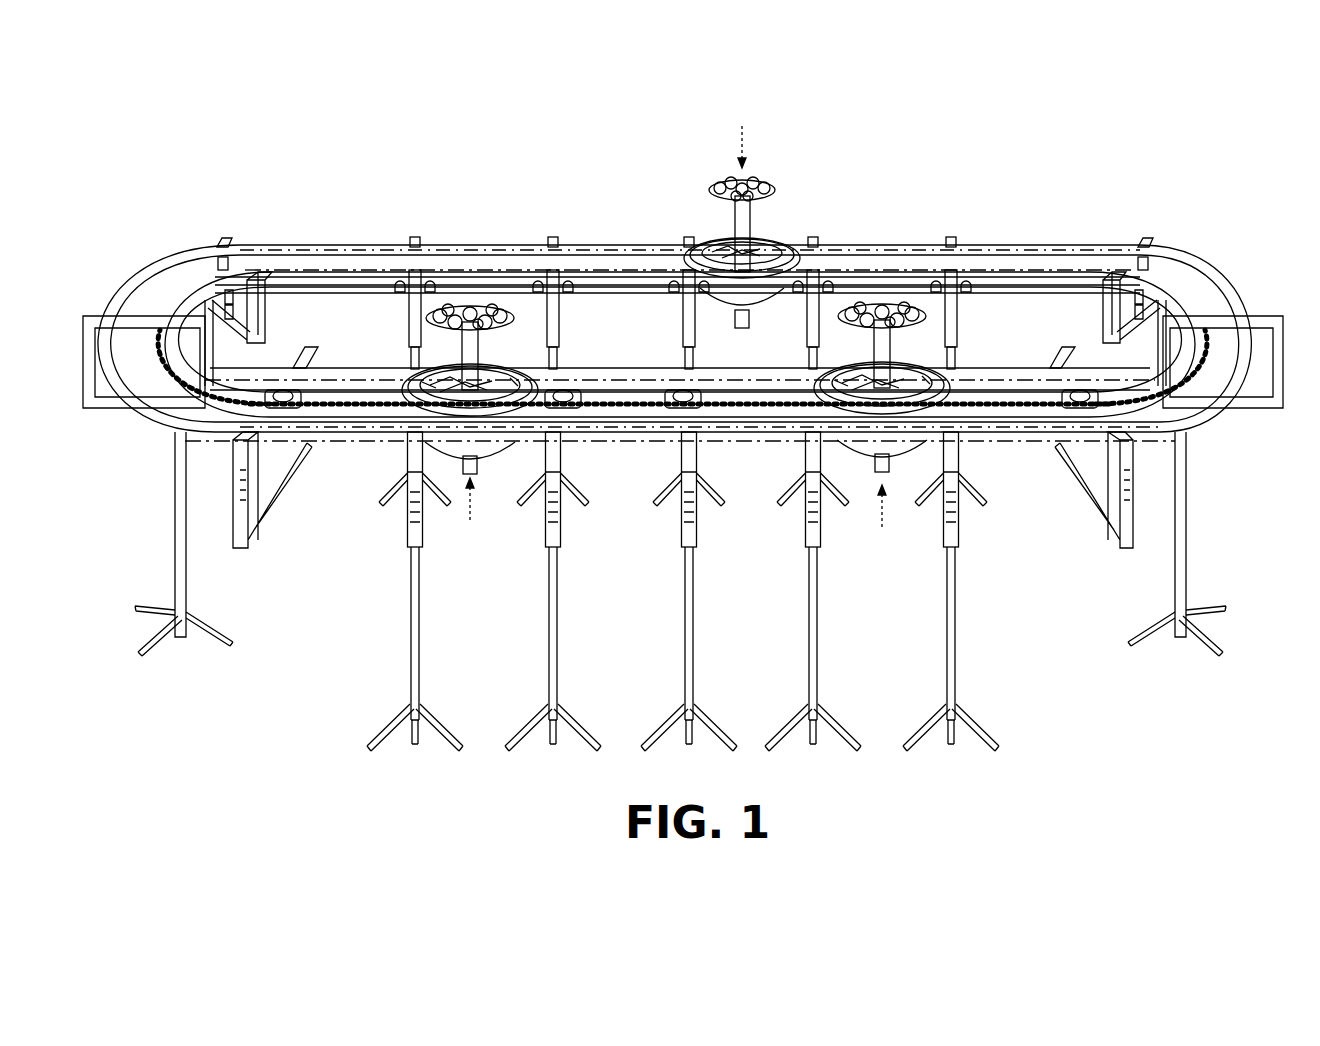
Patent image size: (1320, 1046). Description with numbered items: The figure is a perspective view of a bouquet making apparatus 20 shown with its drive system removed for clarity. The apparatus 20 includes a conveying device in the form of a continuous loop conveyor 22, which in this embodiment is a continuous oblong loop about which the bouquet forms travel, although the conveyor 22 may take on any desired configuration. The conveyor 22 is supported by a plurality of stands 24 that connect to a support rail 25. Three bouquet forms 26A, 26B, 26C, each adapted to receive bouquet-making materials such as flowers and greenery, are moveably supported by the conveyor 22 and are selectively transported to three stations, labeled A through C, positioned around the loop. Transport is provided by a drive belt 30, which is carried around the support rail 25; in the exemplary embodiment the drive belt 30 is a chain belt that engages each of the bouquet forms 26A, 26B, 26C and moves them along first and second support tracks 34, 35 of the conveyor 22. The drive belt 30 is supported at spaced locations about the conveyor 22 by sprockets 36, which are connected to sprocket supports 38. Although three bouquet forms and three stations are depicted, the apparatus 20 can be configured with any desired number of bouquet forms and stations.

The bouquet making apparatus 20 is at (236, 180).
The continuous loop conveyor 22 is at (132, 434).
The stands 24 is at (407, 618).
The support rail 25 is at (1042, 294).
The bouquet form 26A is at (778, 215).
The bouquet form 26B is at (470, 308).
The bouquet form 26C is at (884, 306).
The drive belt 30 is at (357, 418).
The first support track 34 is at (217, 435).
The second support track 35 is at (351, 378).
The sprockets 36 is at (577, 378).
The sprocket supports 38 is at (1114, 535).